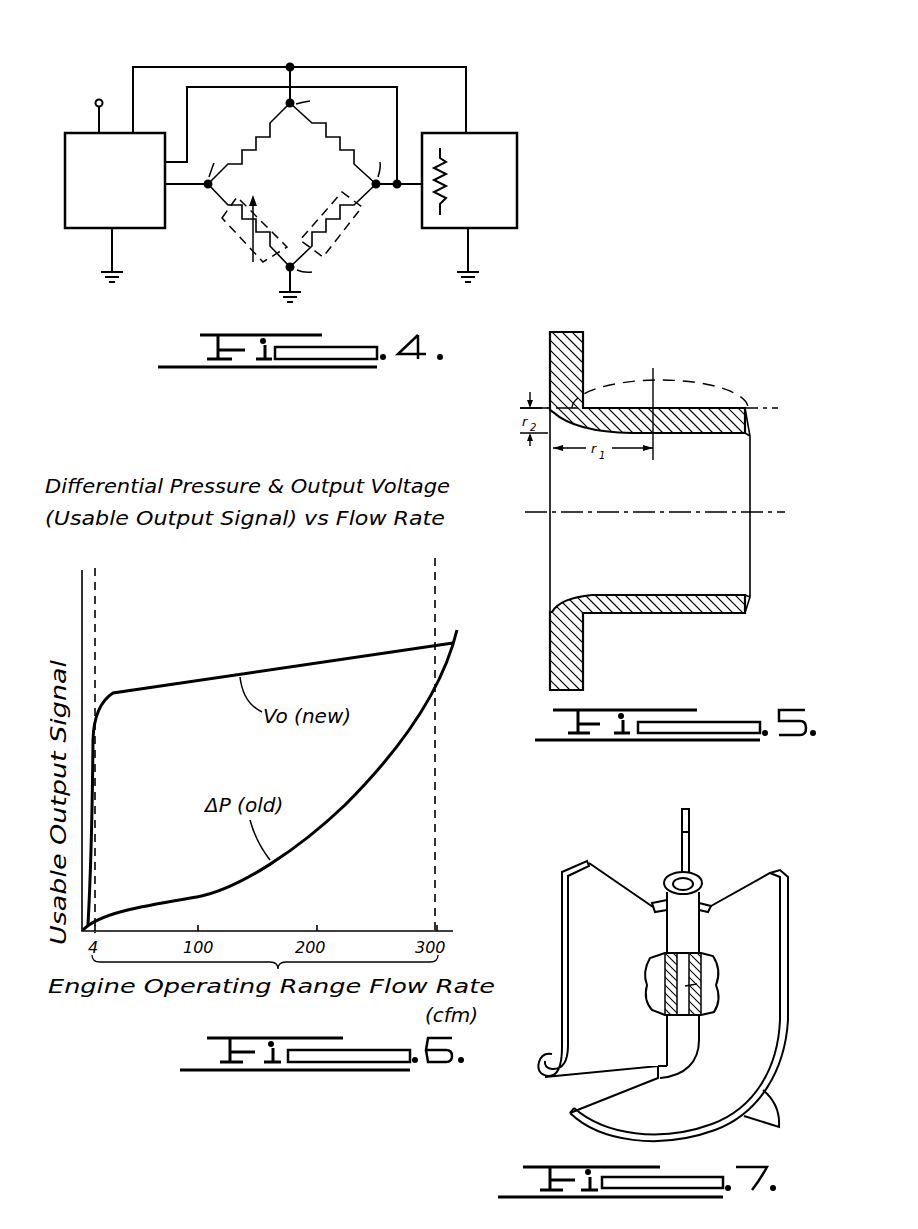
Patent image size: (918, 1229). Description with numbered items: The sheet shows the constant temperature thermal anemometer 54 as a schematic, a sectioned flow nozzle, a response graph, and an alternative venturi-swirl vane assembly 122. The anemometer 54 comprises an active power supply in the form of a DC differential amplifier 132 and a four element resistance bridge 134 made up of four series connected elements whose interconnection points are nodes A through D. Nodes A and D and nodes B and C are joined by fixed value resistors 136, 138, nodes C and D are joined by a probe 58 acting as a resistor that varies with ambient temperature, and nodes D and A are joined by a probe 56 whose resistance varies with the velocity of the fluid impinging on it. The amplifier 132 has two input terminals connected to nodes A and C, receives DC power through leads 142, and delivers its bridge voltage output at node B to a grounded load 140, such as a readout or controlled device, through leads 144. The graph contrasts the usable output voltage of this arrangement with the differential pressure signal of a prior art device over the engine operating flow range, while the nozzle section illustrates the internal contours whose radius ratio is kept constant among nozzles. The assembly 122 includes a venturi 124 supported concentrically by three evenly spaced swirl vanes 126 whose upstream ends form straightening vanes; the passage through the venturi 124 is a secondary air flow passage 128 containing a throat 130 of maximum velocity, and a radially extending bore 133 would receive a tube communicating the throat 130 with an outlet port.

In FIG. 4, the anemometer 54 is at (412, 56).
In FIG. 4, the probe 56 is at (240, 236).
In FIG. 4, the probe 58 is at (338, 228).
In FIG. 4, the DC differential amplifier 132 is at (97, 222).
In FIG. 4, the four element resistance bridge 134 is at (306, 197).
In FIG. 4, the fixed value resistor 136 is at (248, 143).
In FIG. 4, the fixed value resistor 138 is at (330, 137).
In FIG. 4, the load 140 is at (500, 205).
In FIG. 4, the leads 142 is at (96, 112).
In FIG. 4, the leads 144 is at (470, 91).
In FIG. 7, the venturi-swirl vane assembly 122 is at (733, 848).
In FIG. 7, the venturi 124 is at (680, 928).
In FIG. 7, the swirl vanes 126 is at (680, 818).
In FIG. 7, the secondary air flow passage 128 is at (670, 884).
In FIG. 7, the throat 130 is at (683, 976).
In FIG. 7, the radially extending bore 133 is at (693, 989).